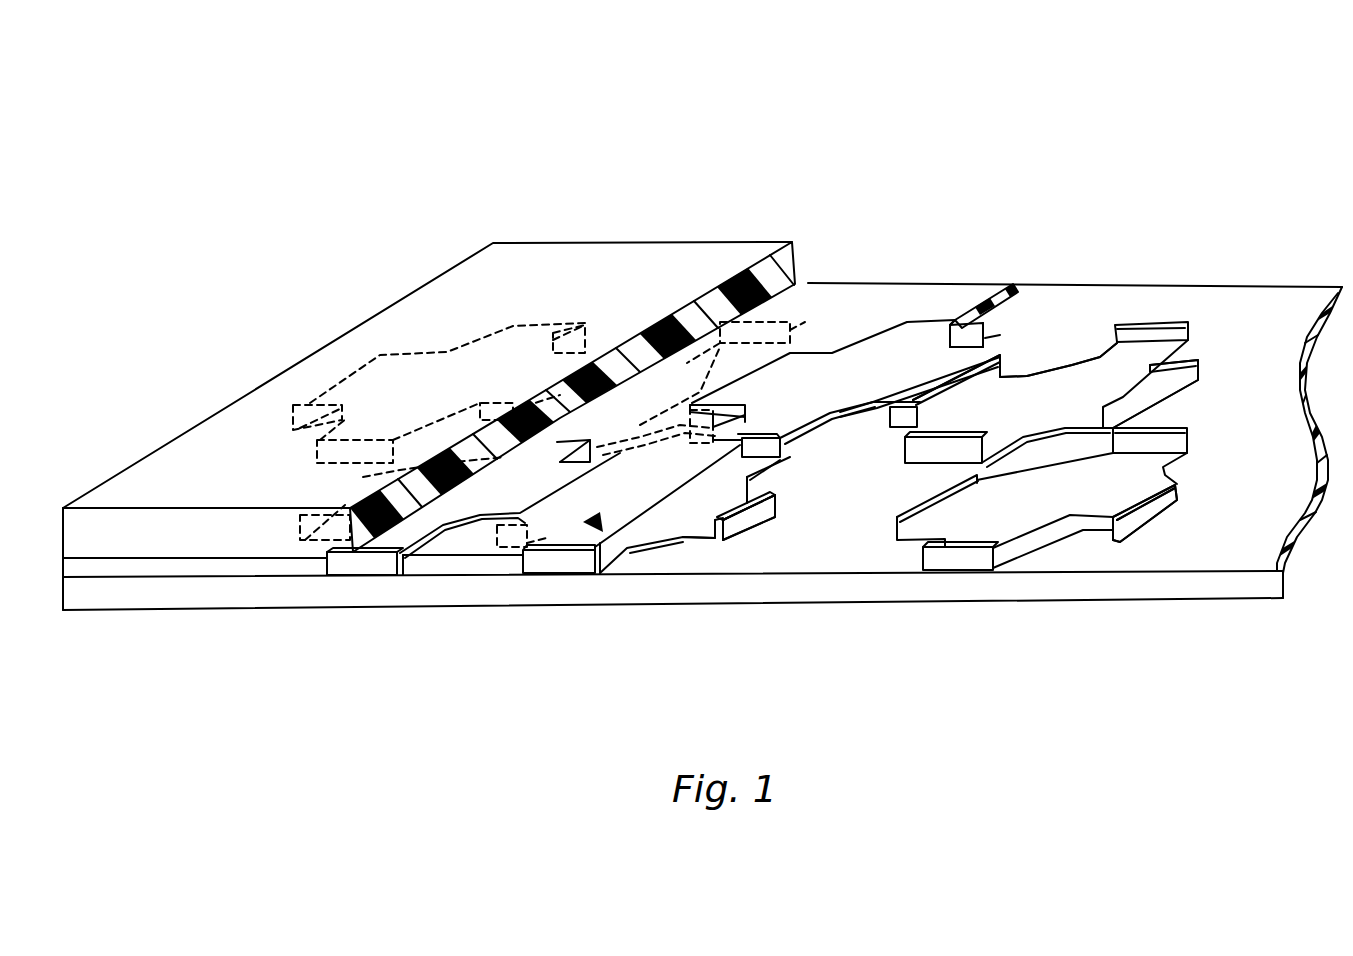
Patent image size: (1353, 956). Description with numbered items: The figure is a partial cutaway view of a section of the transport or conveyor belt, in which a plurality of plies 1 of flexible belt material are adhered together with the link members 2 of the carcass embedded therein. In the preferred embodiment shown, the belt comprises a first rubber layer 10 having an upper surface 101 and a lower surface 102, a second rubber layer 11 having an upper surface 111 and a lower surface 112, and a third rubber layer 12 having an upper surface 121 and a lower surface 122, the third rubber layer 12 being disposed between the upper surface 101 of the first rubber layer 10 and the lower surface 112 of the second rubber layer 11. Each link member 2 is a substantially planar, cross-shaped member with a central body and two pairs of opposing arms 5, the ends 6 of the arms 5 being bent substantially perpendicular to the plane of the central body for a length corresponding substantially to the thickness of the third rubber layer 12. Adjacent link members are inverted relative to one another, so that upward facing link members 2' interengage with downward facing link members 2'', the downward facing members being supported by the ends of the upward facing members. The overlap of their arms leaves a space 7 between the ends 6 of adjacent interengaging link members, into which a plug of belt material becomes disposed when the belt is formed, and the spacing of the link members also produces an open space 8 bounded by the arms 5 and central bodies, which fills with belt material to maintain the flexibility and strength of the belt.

The plies 1 is at (410, 158).
The first rubber layer 10 is at (233, 598).
The second rubber layer 11 is at (112, 542).
The third rubber layer 12 is at (162, 567).
The upper surface 111 is at (503, 265).
The lower surface 112 is at (788, 286).
The upper surface 121 is at (895, 290).
The lower surface 122 is at (1010, 286).
The upper surface 101 is at (1242, 310).
The lower surface 102 is at (1050, 604).
The link member 2 is at (1047, 449).
The upward facing link member 2' is at (558, 543).
The downward facing link member 2'' is at (845, 328).
The arms 5 is at (690, 537).
The ends 6 is at (753, 515).
The space 7 is at (900, 420).
The open space 8 is at (453, 420).